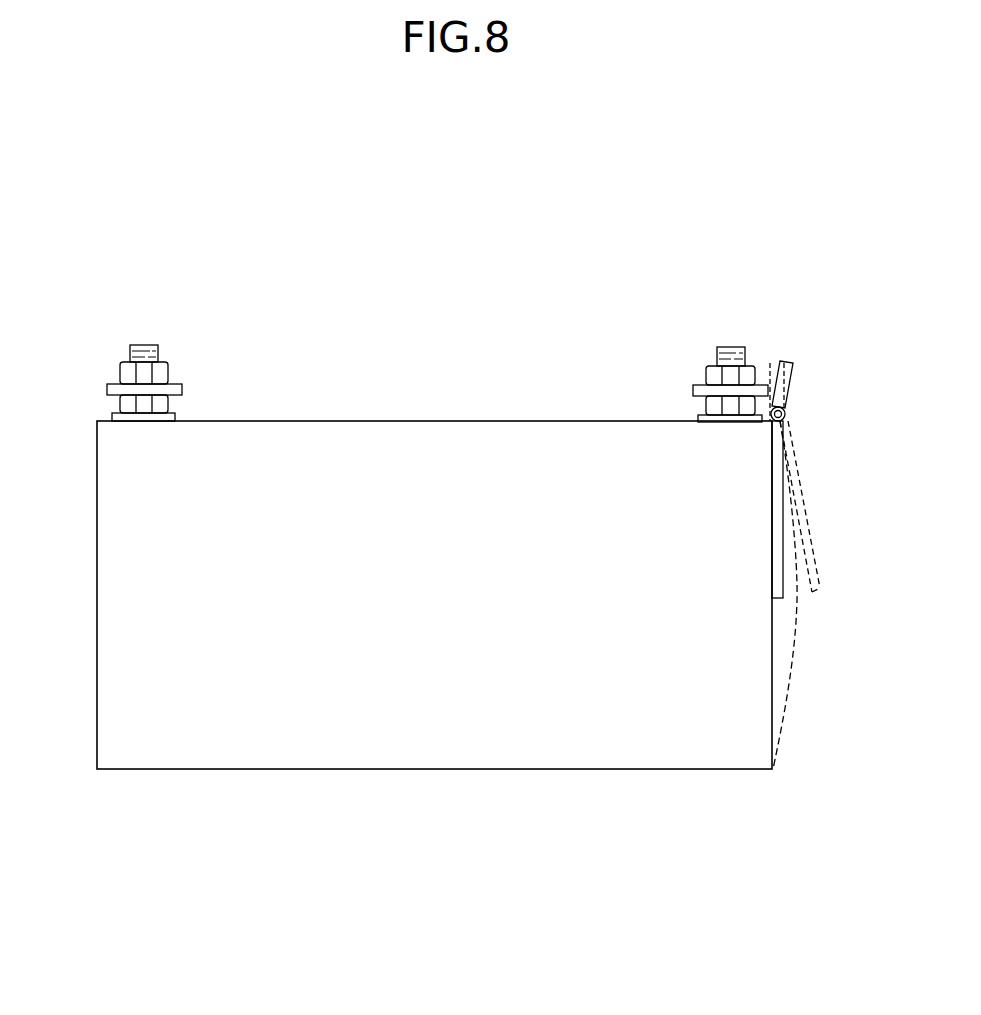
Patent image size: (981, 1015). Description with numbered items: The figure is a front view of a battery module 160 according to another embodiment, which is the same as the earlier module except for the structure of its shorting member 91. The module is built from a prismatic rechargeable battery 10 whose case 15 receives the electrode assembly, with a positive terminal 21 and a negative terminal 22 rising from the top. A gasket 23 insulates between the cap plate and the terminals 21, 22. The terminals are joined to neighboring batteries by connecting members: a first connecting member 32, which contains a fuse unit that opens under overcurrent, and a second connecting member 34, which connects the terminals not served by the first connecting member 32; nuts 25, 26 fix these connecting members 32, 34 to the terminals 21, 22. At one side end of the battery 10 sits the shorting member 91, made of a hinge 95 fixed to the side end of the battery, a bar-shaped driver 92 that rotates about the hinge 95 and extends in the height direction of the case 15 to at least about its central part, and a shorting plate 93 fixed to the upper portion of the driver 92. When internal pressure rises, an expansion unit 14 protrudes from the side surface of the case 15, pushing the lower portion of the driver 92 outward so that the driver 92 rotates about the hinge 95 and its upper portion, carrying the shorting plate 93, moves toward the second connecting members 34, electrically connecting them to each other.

The battery module 160 is at (459, 201).
The rechargeable battery 10 is at (352, 773).
The case 15 is at (568, 735).
The expansion unit 14 is at (791, 680).
The positive terminal 21 is at (145, 348).
The negative terminal 22 is at (728, 350).
The gasket 23 is at (115, 416).
The nut 25 is at (122, 404).
The nut 26 is at (126, 369).
The first connecting member 32 is at (175, 386).
The second connecting member 34 is at (695, 388).
The shorting member 91 is at (787, 349).
The driver 92 is at (776, 562).
The shorting plate 93 is at (793, 371).
The hinge 95 is at (786, 412).